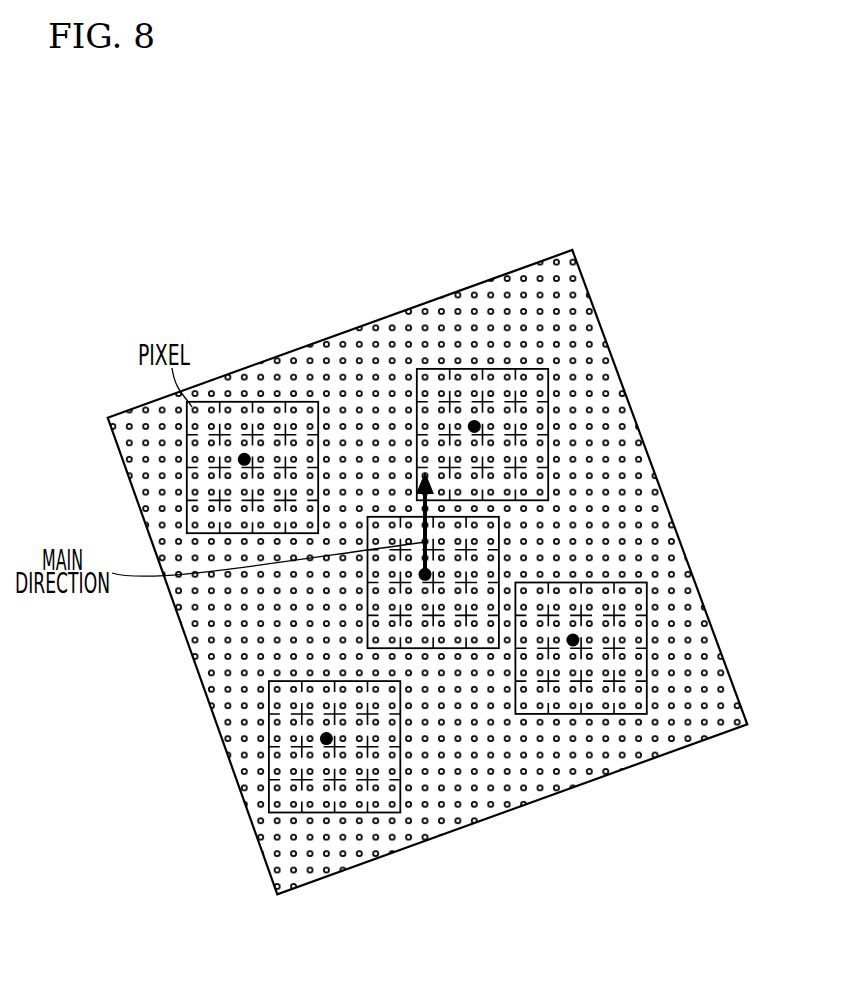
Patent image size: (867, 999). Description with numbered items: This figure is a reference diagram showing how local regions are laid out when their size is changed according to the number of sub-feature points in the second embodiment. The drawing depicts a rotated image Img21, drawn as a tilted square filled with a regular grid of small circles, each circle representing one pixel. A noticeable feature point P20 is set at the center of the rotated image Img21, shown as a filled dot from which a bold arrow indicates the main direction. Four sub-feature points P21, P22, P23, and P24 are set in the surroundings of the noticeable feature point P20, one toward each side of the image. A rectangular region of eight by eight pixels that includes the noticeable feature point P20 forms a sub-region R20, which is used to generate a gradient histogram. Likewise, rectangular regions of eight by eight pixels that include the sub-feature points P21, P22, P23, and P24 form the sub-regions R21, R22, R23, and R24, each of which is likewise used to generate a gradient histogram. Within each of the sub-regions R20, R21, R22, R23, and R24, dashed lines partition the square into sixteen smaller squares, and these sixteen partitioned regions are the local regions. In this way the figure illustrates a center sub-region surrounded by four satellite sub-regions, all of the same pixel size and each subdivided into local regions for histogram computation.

The rotated image Img21 is at (253, 364).
The sub-region R20 is at (500, 565).
The sub-region R21 is at (303, 402).
The sub-region R22 is at (318, 814).
The sub-region R23 is at (647, 668).
The sub-region R24 is at (548, 418).
The noticeable feature point P20 is at (420, 577).
The sub-feature point P21 is at (238, 460).
The sub-feature point P22 is at (320, 742).
The sub-feature point P23 is at (571, 645).
The sub-feature point P24 is at (472, 415).